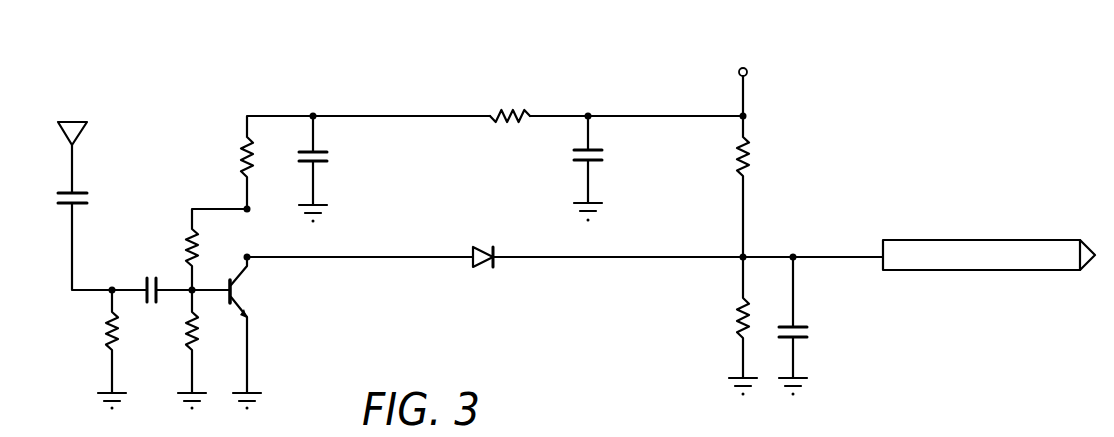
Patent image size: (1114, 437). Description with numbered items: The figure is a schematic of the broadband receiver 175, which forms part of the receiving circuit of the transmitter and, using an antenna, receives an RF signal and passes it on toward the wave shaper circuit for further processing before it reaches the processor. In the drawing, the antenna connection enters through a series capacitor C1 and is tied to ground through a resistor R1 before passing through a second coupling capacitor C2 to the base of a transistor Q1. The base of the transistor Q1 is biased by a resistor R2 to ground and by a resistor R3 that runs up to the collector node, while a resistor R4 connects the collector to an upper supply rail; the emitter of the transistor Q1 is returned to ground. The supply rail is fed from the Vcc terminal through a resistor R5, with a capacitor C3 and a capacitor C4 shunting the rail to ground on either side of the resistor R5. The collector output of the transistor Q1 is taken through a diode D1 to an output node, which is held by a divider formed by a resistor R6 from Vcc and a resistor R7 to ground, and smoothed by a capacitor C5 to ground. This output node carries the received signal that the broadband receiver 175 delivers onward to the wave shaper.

The broadband receiver 175 is at (930, 125).
The capacitor C1 is at (92, 198).
The capacitor C2 is at (162, 275).
The capacitor C3 is at (331, 169).
The capacitor C4 is at (606, 169).
The capacitor C5 is at (811, 326).
The resistor R1 is at (103, 350).
The resistor R2 is at (207, 350).
The resistor R3 is at (216, 249).
The resistor R4 is at (349, 162).
The resistor R5 is at (510, 101).
The resistor R6 is at (763, 186).
The resistor R7 is at (728, 326).
The transistor Q1 is at (255, 333).
The diode D1 is at (485, 241).